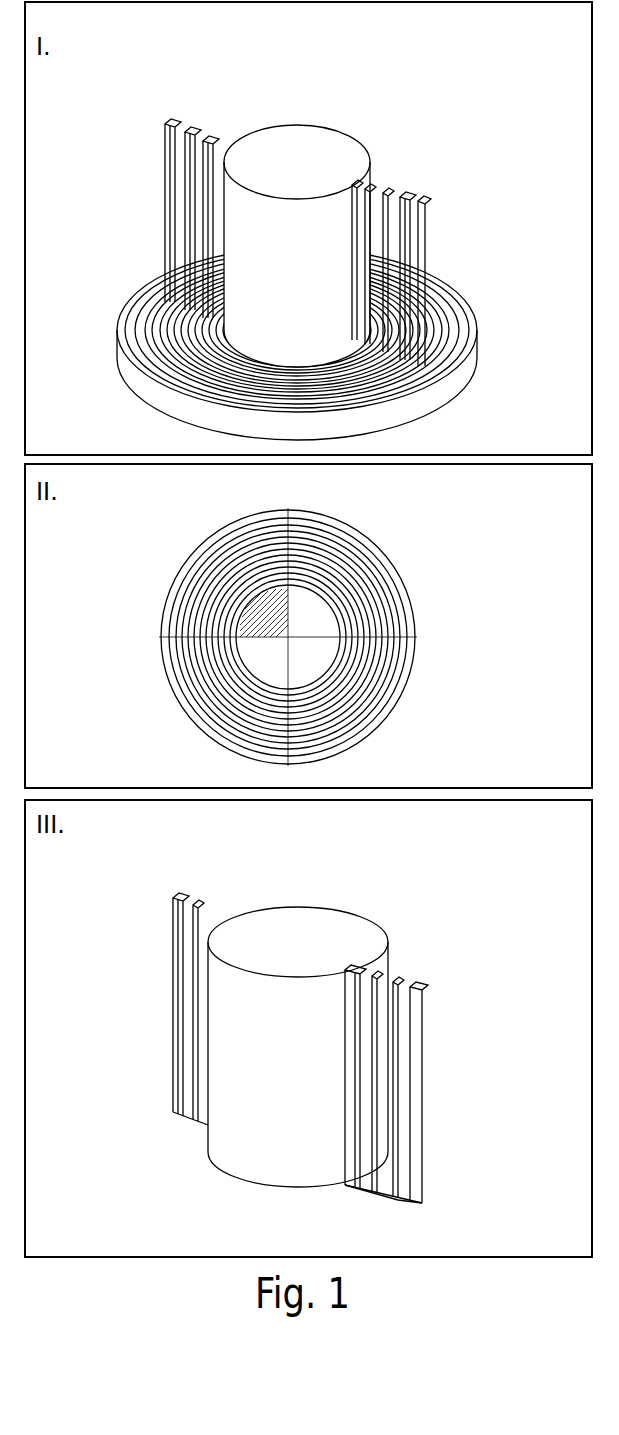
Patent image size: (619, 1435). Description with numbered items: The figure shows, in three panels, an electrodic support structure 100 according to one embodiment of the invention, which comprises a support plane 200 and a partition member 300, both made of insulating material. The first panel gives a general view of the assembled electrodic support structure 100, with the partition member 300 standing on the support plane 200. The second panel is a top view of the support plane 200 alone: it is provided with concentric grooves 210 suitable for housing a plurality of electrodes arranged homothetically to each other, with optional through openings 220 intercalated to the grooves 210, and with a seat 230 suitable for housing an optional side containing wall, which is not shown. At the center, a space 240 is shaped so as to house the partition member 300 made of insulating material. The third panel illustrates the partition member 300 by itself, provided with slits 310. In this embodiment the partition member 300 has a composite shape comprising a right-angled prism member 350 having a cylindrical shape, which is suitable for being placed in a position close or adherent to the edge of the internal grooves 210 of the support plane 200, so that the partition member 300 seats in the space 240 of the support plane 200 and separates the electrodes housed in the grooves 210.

The electrodic support structure 100 is at (319, 86).
The support plane 200 is at (463, 366).
The grooves 210 is at (343, 597).
The through openings 220 is at (350, 677).
The seat 230 is at (340, 731).
The space 240 is at (250, 633).
The partition member 300 is at (348, 156).
The right-angled prism member 350 is at (388, 940).
The slits 310 is at (395, 1212).